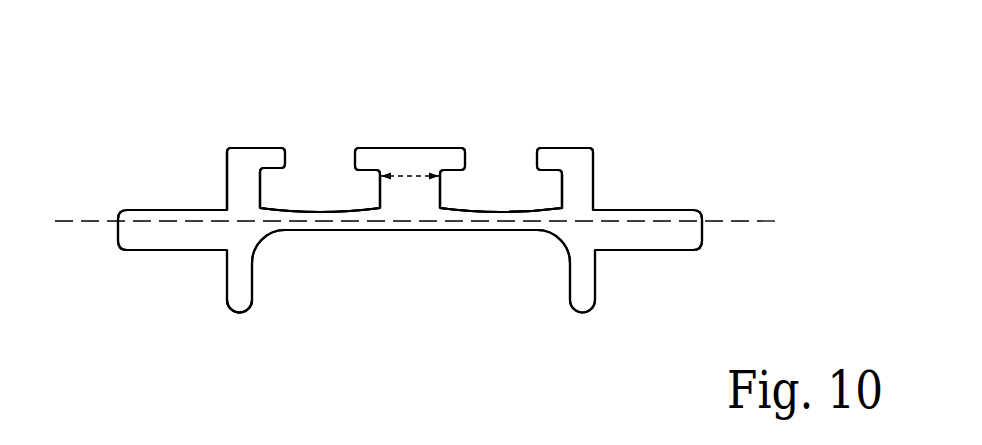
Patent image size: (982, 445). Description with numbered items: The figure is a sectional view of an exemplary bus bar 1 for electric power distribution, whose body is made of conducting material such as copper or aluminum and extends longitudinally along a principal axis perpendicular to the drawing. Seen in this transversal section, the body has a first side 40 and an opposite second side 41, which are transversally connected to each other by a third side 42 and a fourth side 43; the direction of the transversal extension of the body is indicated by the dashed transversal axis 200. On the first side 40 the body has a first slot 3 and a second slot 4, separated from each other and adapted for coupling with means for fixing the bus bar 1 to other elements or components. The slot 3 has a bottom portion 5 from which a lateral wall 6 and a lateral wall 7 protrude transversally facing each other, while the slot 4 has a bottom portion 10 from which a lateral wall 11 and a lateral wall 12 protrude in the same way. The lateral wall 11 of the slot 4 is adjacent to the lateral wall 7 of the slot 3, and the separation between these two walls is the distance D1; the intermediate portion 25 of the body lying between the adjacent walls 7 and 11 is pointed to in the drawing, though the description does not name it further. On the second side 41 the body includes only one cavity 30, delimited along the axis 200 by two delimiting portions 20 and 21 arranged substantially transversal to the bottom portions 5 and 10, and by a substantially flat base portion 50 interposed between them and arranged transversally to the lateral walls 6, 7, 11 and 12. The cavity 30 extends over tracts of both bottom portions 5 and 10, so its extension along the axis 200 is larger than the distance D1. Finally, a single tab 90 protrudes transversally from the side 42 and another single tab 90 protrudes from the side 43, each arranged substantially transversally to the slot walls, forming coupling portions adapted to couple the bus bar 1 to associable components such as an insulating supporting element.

The bus bar 1 is at (737, 106).
The first slot 3 is at (300, 185).
The second slot 4 is at (526, 183).
The bottom portion 5 is at (314, 208).
The lateral wall 6 is at (265, 188).
The lateral wall 7 is at (374, 188).
The bottom portion 10 is at (510, 208).
The lateral wall 11 is at (448, 188).
The lateral wall 12 is at (553, 187).
The delimiting portion 20 is at (238, 290).
The delimiting portion 21 is at (580, 294).
The central web 25 is at (412, 193).
The cavity 30 is at (353, 284).
The first side 40 is at (250, 146).
The second side 41 is at (241, 319).
The third side 42 is at (225, 183).
The fourth side 43 is at (596, 182).
The base portion 50 is at (467, 235).
The tab 90 is at (133, 237).
The transversal axis 200 is at (749, 218).
The distance D1 is at (413, 173).